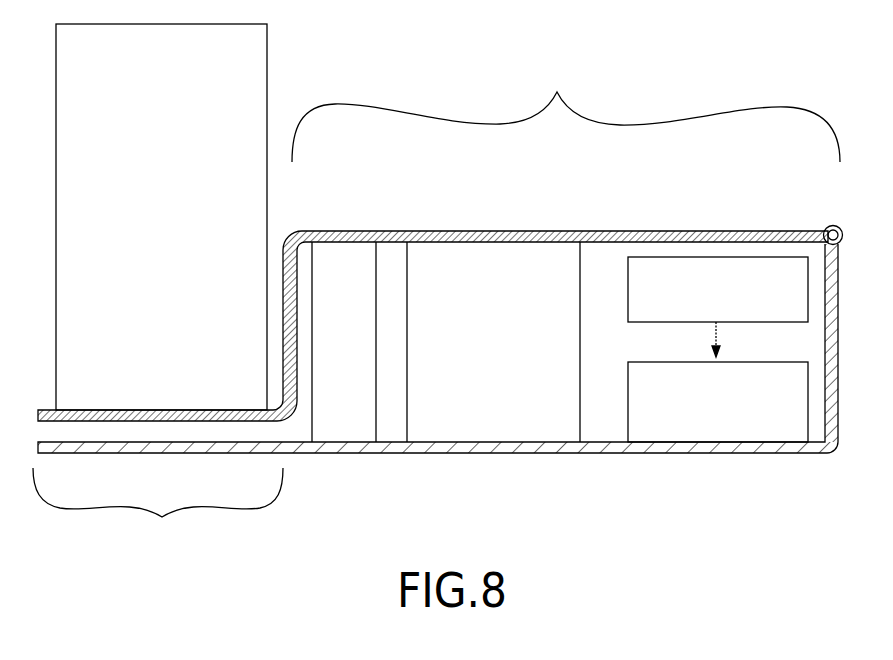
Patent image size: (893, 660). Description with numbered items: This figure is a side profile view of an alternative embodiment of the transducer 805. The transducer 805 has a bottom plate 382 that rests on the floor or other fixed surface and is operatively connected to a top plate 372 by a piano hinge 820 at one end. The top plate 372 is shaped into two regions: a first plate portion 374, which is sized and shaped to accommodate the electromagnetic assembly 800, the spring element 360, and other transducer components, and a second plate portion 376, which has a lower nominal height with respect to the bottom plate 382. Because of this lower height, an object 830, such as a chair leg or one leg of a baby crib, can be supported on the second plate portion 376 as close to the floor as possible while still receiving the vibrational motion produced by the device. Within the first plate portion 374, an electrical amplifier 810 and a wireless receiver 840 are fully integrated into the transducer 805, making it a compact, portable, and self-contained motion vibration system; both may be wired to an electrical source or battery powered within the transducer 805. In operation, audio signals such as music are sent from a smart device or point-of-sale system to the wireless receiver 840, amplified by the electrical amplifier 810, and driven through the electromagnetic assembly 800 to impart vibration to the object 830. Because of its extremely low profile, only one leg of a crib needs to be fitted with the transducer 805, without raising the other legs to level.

The transducer 805 is at (359, 61).
The object 830 is at (161, 217).
The top plate 372 is at (537, 231).
The bottom plate 382 is at (601, 449).
The piano hinge 820 is at (827, 227).
The electromagnetic assembly 800 is at (472, 340).
The spring element 360 is at (352, 258).
The wireless receiver 840 is at (698, 295).
The electrical amplifier 810 is at (700, 413).
The first plate portion 374 is at (566, 109).
The second plate portion 376 is at (158, 509).